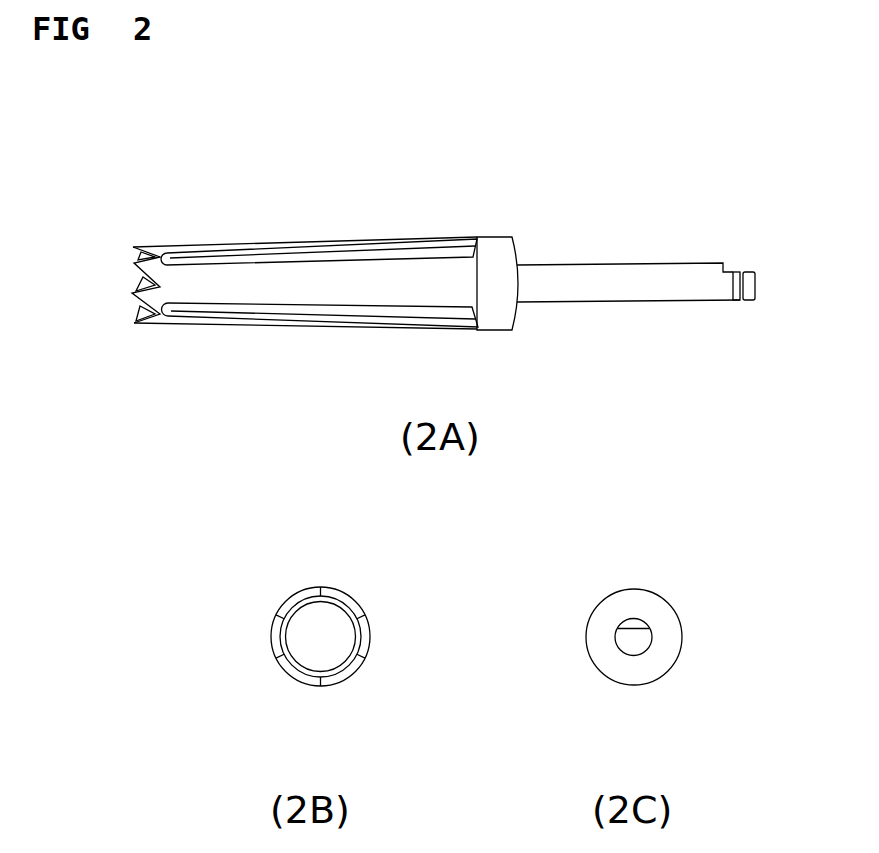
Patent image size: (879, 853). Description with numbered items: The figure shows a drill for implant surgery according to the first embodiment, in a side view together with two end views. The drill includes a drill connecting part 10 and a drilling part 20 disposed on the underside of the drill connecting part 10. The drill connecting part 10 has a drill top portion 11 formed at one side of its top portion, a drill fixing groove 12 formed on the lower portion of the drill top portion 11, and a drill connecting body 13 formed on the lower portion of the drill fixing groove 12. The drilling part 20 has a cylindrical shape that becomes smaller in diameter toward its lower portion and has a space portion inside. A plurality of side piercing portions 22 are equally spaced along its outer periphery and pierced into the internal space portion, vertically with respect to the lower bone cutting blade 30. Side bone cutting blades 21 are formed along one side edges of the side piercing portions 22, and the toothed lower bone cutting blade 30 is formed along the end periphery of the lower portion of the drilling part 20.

The drill connecting part 10 is at (622, 192).
The drill top portion 11 is at (757, 287).
The drill fixing groove 12 is at (737, 300).
The drill connecting body 13 is at (645, 288).
The drilling part 20 is at (262, 200).
The side bone cutting blades 21 is at (245, 290).
The side piercing portions 22 is at (413, 254).
The lower bone cutting blade 30 is at (136, 294).